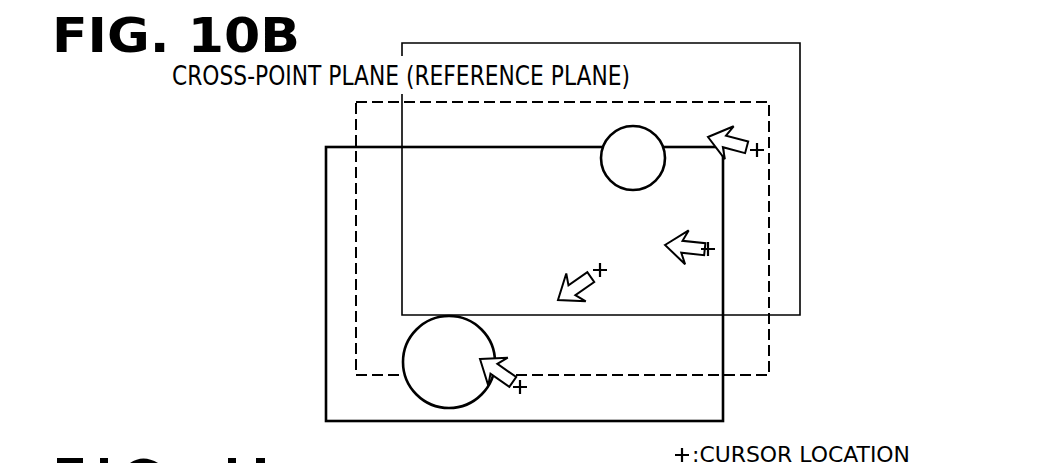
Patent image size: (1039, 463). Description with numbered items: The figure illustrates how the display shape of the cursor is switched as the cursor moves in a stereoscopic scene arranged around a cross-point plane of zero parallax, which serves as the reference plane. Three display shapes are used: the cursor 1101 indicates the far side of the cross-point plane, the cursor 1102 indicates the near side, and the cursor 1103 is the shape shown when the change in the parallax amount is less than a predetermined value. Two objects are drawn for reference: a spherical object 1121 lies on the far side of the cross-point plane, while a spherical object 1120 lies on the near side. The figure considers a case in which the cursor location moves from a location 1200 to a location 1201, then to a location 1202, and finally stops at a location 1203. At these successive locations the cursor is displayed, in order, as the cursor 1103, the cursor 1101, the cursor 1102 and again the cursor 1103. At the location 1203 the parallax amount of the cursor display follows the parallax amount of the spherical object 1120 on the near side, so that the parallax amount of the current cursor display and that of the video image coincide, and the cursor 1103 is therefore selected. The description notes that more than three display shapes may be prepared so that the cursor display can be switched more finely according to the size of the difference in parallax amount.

The cursor 1101 is at (668, 236).
The cursor 1102 is at (565, 277).
The cursor 1103 is at (742, 137).
The spherical object 1120 is at (409, 385).
The spherical object 1121 is at (651, 128).
The location 1200 is at (762, 156).
The location 1201 is at (713, 251).
The location 1202 is at (605, 270).
The location 1203 is at (524, 388).